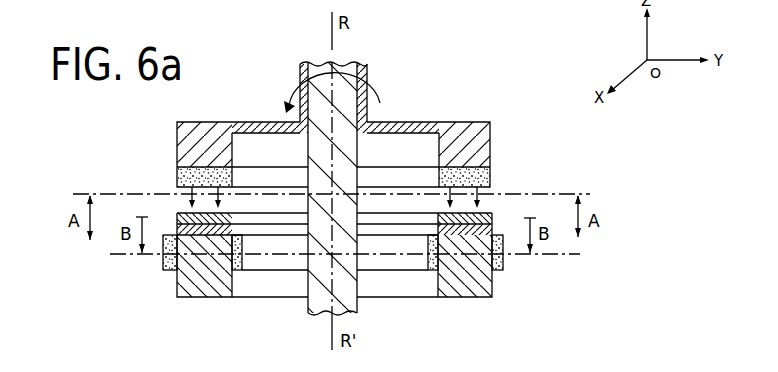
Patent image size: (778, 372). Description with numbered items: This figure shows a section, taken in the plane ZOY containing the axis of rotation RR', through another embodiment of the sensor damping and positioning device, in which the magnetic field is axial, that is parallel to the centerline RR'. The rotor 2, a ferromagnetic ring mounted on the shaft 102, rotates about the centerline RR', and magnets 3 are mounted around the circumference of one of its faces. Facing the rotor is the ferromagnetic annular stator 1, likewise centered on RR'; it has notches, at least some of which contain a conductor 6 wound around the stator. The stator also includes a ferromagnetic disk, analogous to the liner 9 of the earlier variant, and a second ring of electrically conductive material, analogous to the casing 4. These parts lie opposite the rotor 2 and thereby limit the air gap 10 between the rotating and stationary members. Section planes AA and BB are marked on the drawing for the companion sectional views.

The ferromagnetic annular stator 1 is at (470, 292).
The rotor 2 is at (490, 138).
The magnets 3 is at (490, 172).
The casing 4 is at (485, 220).
The conductor 6 is at (503, 258).
The liner 9 is at (183, 229).
The air gap 10 is at (190, 202).
The shaft 102 is at (310, 306).